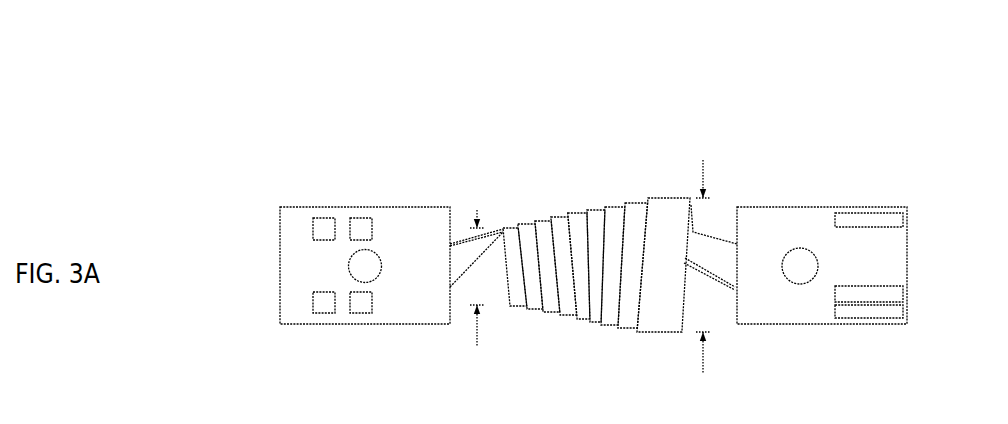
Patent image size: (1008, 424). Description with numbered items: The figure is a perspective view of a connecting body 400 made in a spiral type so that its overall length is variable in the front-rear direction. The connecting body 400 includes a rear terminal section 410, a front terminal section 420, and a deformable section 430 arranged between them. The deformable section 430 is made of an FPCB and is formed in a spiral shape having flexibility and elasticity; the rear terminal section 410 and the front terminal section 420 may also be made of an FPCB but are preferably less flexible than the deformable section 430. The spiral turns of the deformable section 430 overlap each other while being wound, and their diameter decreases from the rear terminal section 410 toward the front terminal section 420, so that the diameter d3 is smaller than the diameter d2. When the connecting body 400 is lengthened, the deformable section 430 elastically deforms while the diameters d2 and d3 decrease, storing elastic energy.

The connecting body 400 is at (455, 32).
The rear terminal section 410 is at (822, 182).
The front terminal section 420 is at (362, 190).
The deformable section 430 is at (586, 172).
The diameter d2 is at (704, 277).
The diameter d3 is at (478, 289).